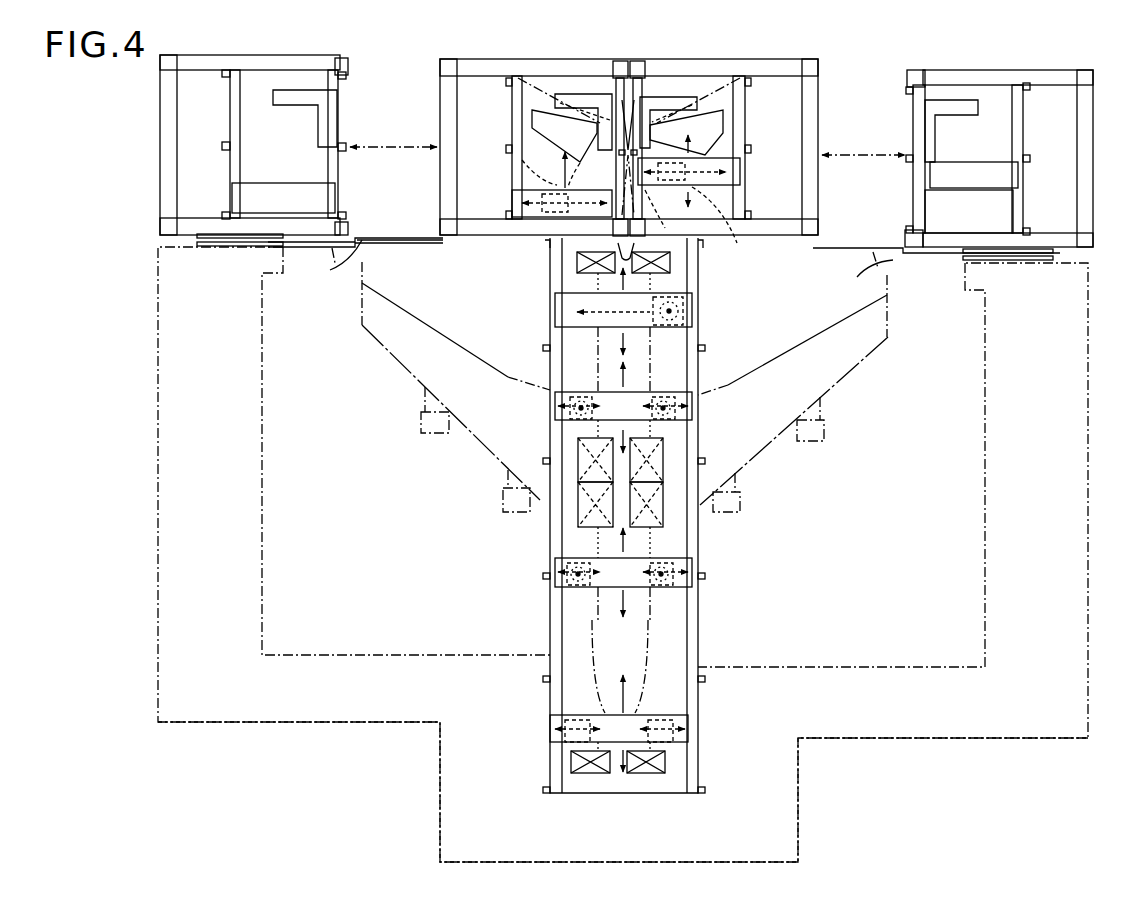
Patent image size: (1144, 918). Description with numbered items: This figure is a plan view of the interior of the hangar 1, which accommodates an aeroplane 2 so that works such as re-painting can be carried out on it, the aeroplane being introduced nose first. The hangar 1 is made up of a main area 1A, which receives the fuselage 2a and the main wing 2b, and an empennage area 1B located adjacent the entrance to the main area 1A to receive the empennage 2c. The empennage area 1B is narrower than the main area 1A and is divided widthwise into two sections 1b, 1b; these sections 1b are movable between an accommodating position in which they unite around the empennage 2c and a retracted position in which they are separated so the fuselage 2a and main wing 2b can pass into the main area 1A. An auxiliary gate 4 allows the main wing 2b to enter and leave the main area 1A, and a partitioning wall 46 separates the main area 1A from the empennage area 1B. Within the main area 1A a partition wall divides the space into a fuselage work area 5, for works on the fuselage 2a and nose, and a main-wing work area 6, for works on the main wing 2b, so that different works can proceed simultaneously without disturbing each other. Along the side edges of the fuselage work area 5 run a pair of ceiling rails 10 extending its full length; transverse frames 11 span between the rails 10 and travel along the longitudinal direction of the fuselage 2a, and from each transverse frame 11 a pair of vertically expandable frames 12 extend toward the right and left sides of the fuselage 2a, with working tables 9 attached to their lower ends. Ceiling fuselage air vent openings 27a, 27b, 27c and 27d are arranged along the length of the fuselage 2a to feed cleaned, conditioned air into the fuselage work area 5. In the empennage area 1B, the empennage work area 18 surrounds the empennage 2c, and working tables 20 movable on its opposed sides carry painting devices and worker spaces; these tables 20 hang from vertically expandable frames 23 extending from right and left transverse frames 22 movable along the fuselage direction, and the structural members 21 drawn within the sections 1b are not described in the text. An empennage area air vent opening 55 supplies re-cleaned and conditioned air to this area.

The hangar 1 is at (150, 365).
The main area 1A is at (157, 415).
The section 1b is at (160, 150).
The empennage area 1B is at (638, 147).
The aeroplane 2 is at (592, 690).
The fuselage 2a is at (642, 692).
The main wing 2b is at (473, 438).
The empennage 2c is at (745, 150).
The auxiliary gate 4 is at (328, 275).
The fuselage work area 5 is at (607, 507).
The main-wing work area 6 is at (623, 457).
The working table 9 is at (630, 536).
The rail 10 is at (550, 630).
The transverse frame 11 is at (555, 313).
The vertically expandable frame 12 is at (683, 312).
The empennage work area 18 is at (629, 120).
The working table 20 is at (545, 185).
The press column 21 is at (512, 108).
The transverse frame 22 is at (512, 200).
The vertically expandable frame 23 is at (647, 200).
The fuselage air vent opening 27a is at (640, 775).
The fuselage air vent opening 27b is at (578, 515).
The fuselage air vent opening 27c is at (578, 455).
The fuselage air vent opening 27d is at (577, 262).
The partitioning wall 46 is at (478, 250).
The empennage area air vent opening 55 is at (579, 93).